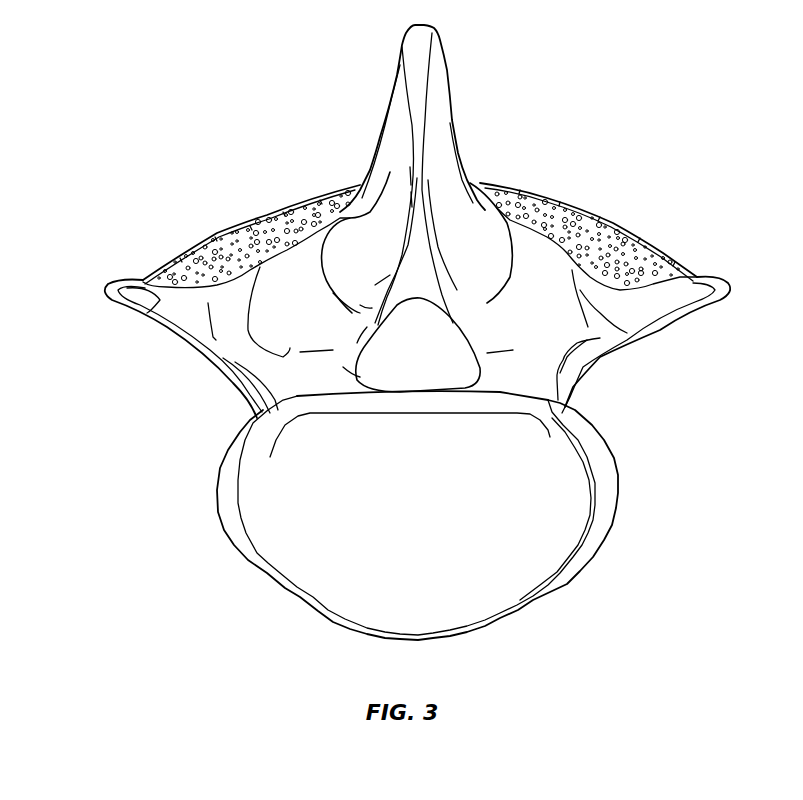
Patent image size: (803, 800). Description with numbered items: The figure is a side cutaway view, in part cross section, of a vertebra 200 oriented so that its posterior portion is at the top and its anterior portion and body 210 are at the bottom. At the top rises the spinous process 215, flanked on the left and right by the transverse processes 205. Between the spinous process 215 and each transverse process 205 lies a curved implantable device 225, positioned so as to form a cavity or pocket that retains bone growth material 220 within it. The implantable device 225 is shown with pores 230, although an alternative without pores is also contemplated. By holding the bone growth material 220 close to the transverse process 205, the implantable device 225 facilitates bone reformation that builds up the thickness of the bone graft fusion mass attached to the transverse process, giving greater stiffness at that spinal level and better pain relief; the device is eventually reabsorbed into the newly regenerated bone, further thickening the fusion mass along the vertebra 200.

The vertebra 200 is at (152, 450).
The transverse process 205 is at (137, 300).
The body 210 is at (570, 532).
The spinous process 215 is at (421, 57).
The bone growth material 220 is at (257, 242).
The implantable device 225 is at (277, 202).
The pores 230 is at (577, 205).